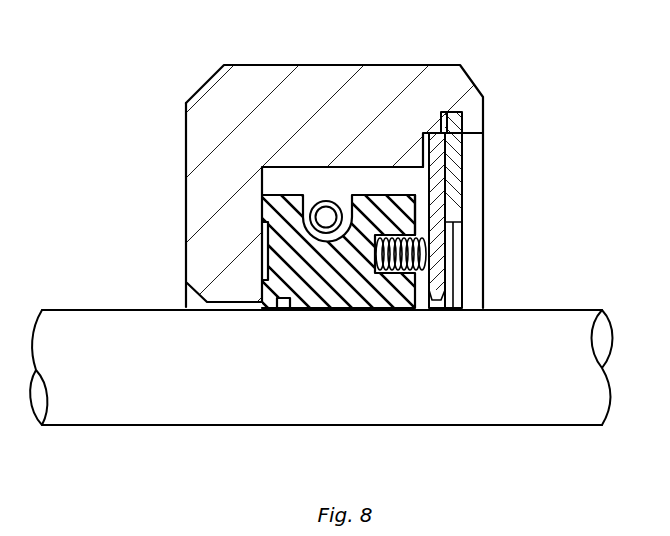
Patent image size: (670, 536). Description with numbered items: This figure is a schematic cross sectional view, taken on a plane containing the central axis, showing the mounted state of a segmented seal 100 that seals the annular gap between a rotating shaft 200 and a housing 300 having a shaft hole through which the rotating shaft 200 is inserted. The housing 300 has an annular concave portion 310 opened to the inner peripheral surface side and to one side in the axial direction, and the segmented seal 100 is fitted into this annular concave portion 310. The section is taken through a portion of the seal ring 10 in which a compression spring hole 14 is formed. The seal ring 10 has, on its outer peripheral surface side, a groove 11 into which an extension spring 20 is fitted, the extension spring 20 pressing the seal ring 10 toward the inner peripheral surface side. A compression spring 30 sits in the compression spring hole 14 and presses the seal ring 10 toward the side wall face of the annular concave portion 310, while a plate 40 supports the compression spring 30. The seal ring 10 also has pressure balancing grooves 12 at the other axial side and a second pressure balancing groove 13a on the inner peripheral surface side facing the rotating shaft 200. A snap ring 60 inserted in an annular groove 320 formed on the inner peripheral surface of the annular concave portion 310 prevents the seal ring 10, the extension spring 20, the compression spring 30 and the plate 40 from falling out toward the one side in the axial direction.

The housing 300 is at (193, 78).
The annular concave portion 310 is at (319, 168).
The annular groove 320 is at (449, 128).
The seal ring 10 is at (378, 182).
The groove 11 is at (352, 194).
The pressure balancing grooves 12 is at (262, 245).
The second pressure balancing groove 13a is at (288, 306).
The compression spring hole 14 is at (403, 170).
The extension spring 20 is at (322, 203).
The segmented seal 100 is at (502, 160).
The snap ring 60 is at (453, 197).
The plate 40 is at (437, 252).
The compression springs 30 is at (437, 290).
The rotating shaft 200 is at (321, 367).